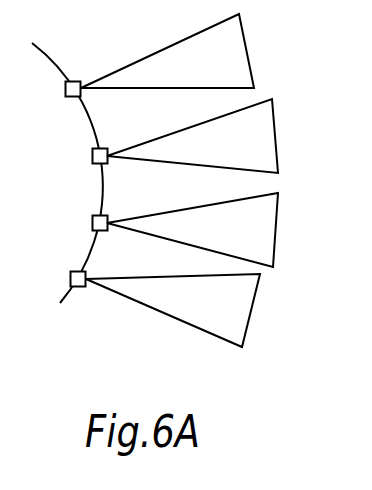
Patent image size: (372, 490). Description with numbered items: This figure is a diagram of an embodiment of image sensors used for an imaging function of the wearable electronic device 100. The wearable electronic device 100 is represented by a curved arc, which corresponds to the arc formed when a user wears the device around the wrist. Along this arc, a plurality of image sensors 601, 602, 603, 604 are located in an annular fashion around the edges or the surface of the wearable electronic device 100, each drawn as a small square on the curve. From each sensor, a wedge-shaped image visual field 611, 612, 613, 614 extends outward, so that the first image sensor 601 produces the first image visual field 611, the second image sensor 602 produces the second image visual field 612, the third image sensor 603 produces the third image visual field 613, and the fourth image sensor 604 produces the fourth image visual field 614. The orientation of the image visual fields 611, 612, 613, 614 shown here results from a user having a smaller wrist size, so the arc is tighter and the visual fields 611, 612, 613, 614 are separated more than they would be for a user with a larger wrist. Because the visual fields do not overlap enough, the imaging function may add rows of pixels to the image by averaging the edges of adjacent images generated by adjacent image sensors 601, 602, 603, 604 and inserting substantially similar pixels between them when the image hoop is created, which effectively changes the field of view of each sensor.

The wearable electronic device 100 is at (47, 57).
The image sensor 601 is at (64, 88).
The image sensor 602 is at (91, 156).
The image sensor 603 is at (91, 223).
The image sensor 604 is at (69, 279).
The image visual field 611 is at (248, 52).
The image visual field 612 is at (278, 135).
The image visual field 613 is at (277, 230).
The image visual field 614 is at (252, 310).